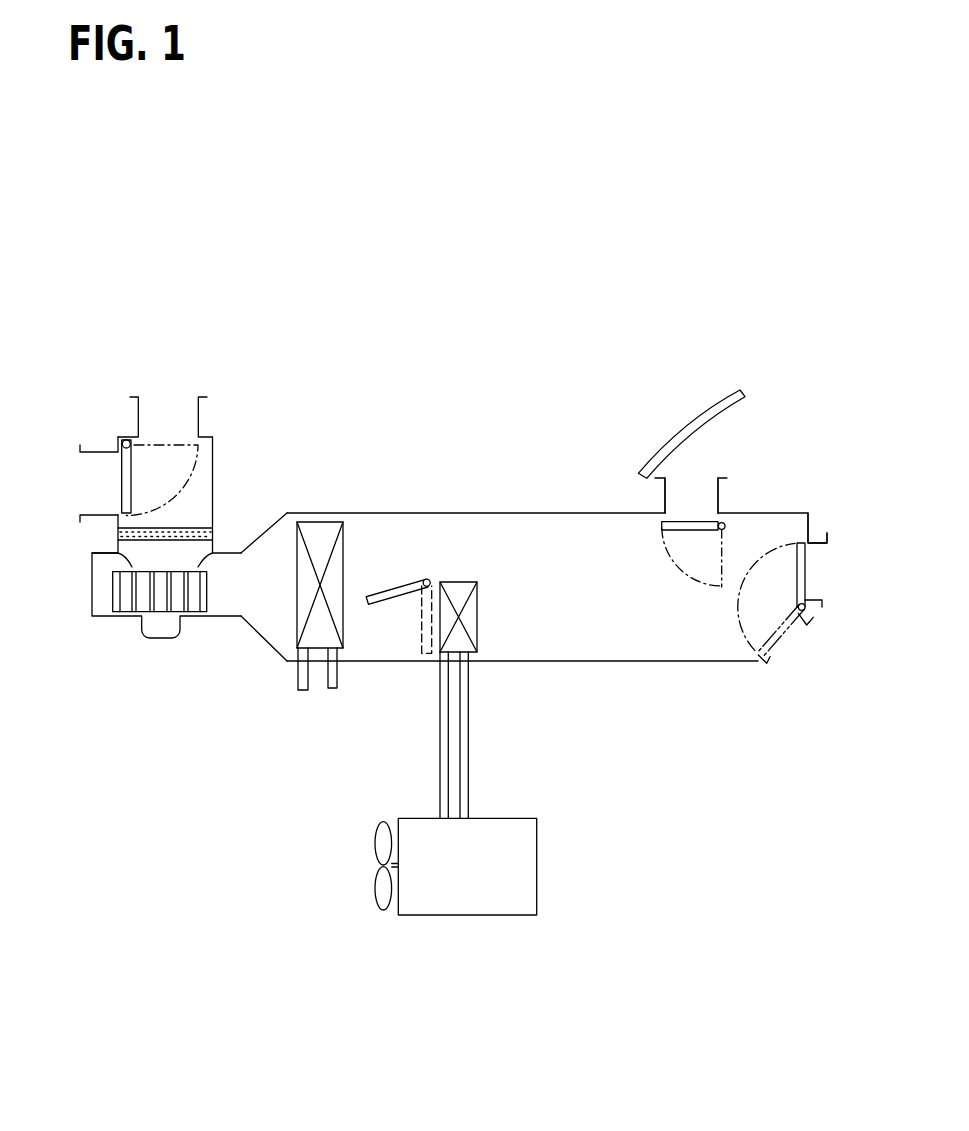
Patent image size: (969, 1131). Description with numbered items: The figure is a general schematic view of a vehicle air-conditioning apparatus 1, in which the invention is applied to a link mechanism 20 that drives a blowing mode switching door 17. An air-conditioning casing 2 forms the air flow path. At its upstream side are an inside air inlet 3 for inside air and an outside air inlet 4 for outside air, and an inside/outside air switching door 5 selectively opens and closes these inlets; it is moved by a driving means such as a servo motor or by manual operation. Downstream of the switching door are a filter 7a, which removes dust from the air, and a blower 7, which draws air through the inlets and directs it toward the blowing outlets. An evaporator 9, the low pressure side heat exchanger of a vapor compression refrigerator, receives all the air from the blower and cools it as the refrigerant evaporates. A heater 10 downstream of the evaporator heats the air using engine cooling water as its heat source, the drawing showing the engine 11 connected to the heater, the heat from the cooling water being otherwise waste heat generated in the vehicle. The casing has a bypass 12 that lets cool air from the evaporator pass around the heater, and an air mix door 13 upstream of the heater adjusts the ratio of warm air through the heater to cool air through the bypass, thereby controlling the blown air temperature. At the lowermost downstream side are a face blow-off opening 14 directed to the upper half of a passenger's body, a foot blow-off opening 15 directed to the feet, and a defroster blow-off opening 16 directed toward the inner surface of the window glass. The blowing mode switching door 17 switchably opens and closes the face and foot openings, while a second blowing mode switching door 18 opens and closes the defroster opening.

The vehicle air-conditioning apparatus 1 is at (473, 406).
The air-conditioning casing 2 is at (417, 513).
The inside air inlet 3 is at (102, 472).
The outside air inlet 4 is at (160, 418).
The inside/outside air switching door 5 is at (117, 500).
The blower 7 is at (168, 621).
The filter 7a is at (193, 527).
The evaporator 9 is at (325, 537).
The heater 10 is at (477, 627).
The engine 11 is at (537, 885).
The bypass 12 is at (487, 530).
The air mix door 13 is at (390, 603).
The face blow-off opening 14 is at (817, 567).
The foot blow-off opening 15 is at (787, 643).
The defroster blow-off opening 16 is at (693, 475).
The blowing mode switching door 17 is at (807, 583).
The blowing mode switching door 18 is at (685, 520).
The link mechanism 20 is at (698, 520).